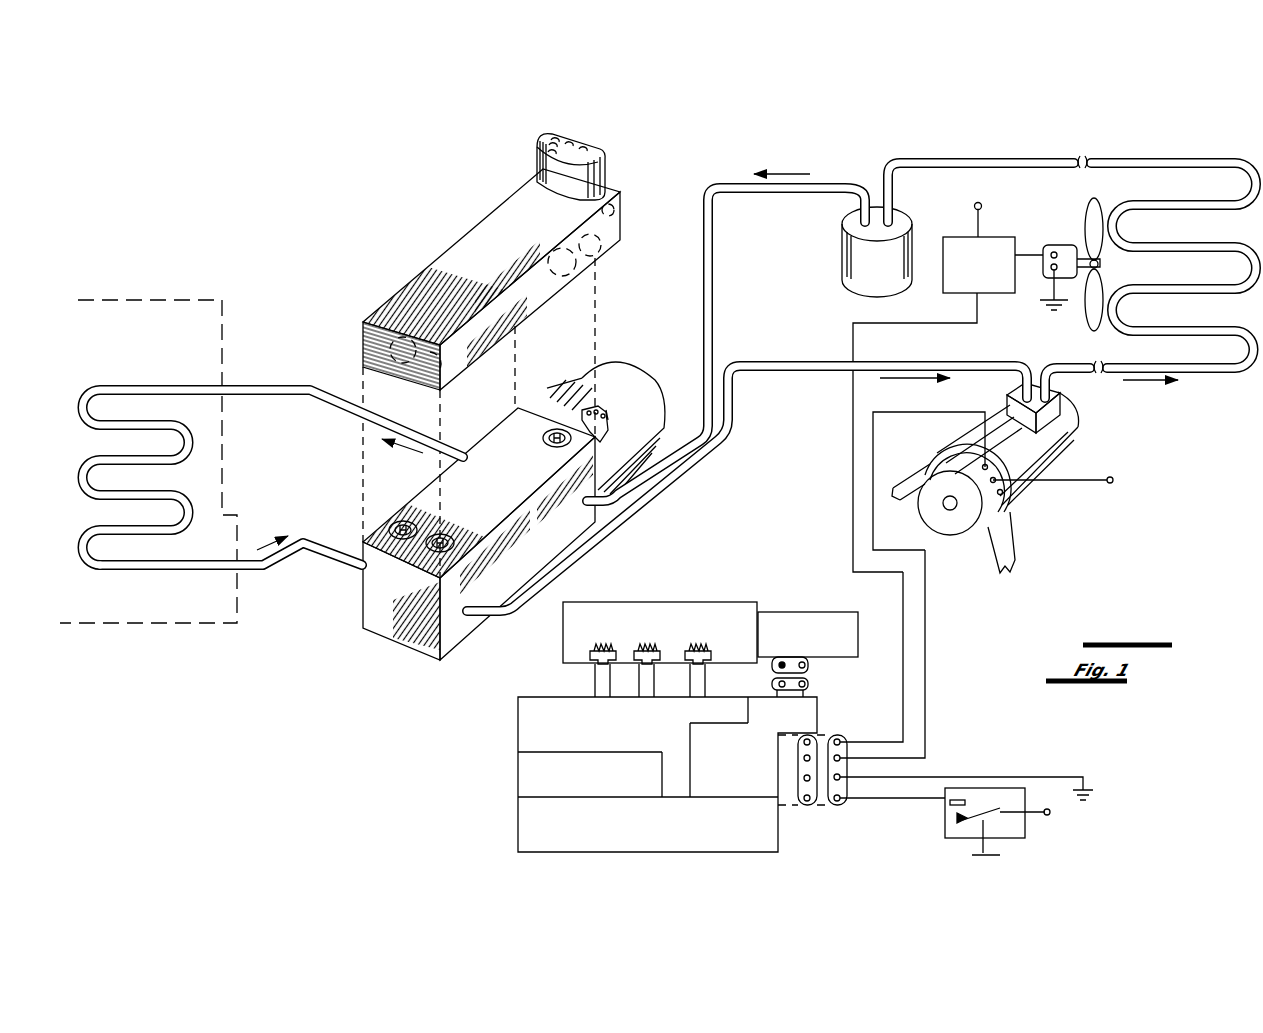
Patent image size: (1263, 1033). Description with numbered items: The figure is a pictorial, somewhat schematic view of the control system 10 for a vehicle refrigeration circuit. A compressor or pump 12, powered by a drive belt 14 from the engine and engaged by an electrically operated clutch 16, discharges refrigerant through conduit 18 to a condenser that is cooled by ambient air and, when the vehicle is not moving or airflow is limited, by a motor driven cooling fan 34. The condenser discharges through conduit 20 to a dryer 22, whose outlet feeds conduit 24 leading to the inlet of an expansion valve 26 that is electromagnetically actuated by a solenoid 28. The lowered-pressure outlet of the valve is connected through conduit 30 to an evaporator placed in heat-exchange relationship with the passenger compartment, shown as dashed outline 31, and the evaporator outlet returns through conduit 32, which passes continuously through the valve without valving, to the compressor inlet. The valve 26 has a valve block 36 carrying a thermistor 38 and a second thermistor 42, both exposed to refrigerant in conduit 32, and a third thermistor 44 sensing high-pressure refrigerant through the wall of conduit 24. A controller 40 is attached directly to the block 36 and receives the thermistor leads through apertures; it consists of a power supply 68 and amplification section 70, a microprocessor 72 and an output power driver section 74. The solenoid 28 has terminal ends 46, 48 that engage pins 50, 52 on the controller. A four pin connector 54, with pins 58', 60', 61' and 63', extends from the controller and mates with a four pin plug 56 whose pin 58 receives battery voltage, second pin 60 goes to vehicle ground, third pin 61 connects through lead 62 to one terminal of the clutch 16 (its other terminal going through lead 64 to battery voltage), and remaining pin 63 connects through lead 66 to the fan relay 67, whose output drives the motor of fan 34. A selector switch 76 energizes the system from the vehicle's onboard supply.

The control system 10 is at (901, 149).
The compressor 12 is at (1012, 492).
The drive belt 14 is at (1010, 535).
The clutch 16 is at (1012, 510).
The conduit 18 is at (1084, 374).
The conduit 20 is at (1008, 157).
The dryer 22 is at (842, 255).
The conduit 24 is at (782, 194).
The expansion valve 26 is at (468, 434).
The solenoid 28 is at (559, 394).
The conduit 30 is at (258, 384).
The dashed outline 31 is at (116, 298).
The conduit 32 is at (333, 535).
The cooling fan 34 is at (1081, 204).
The valve block 36 is at (416, 495).
The thermistor 38 is at (464, 535).
The controller 40 is at (456, 230).
The second thermistor 42 is at (379, 527).
The third thermistor 44 is at (543, 449).
The terminal end 46 is at (580, 405).
The terminal end 48 is at (606, 410).
The pin 50 is at (773, 686).
The pin 52 is at (808, 686).
The four pin connector 54 is at (537, 155).
The four pin plug 56 is at (848, 803).
The pin 58 is at (843, 779).
The pin 58' is at (717, 498).
The second pin 60 is at (963, 787).
The pin 60' is at (680, 473).
The third pin 61 is at (879, 655).
The pin 61' is at (641, 473).
The lead 62 is at (893, 412).
The pin 63 is at (868, 658).
The pin 63' is at (661, 443).
The lead 64 is at (1080, 480).
The lead 66 is at (913, 323).
The fan relay 67 is at (997, 294).
The power supply 68 is at (709, 820).
The amplification section 70 is at (582, 746).
The microprocessor 72 is at (517, 763).
The output power driver section 74 is at (782, 724).
The selector switch 76 is at (1020, 838).